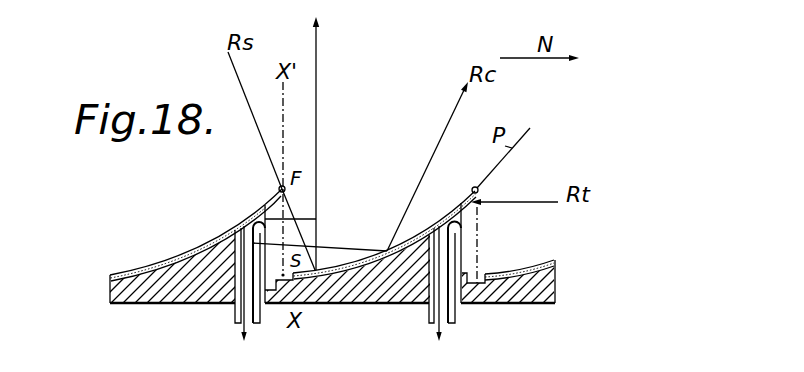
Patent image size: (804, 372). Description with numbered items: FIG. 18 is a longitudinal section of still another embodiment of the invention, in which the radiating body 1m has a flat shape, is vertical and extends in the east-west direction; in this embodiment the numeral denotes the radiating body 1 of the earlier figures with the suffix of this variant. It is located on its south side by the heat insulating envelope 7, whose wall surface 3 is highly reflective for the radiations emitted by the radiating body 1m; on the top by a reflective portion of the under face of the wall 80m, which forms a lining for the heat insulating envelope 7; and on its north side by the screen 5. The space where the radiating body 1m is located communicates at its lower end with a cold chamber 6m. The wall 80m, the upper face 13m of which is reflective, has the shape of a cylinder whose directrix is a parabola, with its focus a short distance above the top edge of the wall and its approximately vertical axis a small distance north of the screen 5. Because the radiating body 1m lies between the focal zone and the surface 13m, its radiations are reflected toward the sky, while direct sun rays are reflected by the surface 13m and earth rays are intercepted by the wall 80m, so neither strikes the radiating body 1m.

The wall 80m is at (236, 221).
The radiating body 1m is at (270, 199).
The wall surface 3 is at (238, 252).
The heat insulating envelope 7 is at (230, 268).
The cold chamber 6m is at (265, 306).
The screen 5 is at (302, 208).
The upper face 13m is at (334, 267).
The inner tube 1 is at (449, 232).